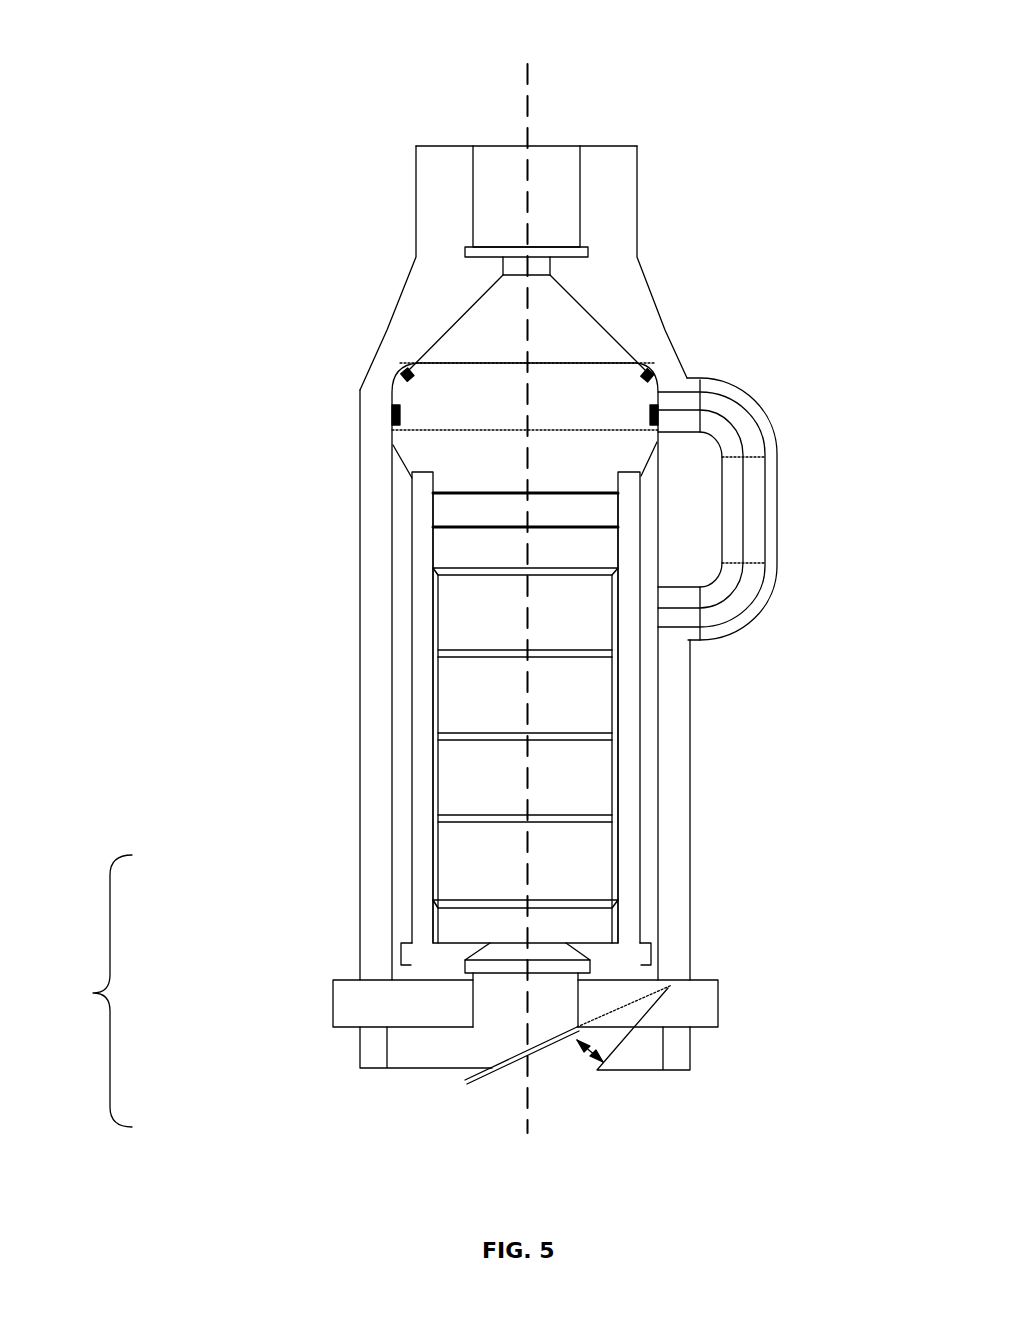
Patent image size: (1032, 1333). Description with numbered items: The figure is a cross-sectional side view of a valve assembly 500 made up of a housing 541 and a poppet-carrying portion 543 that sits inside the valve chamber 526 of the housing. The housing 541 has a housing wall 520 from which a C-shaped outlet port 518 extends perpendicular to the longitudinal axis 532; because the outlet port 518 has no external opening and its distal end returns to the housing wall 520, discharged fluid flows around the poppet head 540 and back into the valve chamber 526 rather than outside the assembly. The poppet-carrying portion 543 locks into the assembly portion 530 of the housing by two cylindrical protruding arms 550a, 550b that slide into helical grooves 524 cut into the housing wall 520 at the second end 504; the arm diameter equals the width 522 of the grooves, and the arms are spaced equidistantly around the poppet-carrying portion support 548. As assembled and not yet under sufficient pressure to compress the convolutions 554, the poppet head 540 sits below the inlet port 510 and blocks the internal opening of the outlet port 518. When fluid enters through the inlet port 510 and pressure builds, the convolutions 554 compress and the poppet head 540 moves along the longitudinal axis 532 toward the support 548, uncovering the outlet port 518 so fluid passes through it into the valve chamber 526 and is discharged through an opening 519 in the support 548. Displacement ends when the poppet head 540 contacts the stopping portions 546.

The valve assembly 500 is at (879, 25).
The second end 504 is at (801, 982).
The inlet port 510 is at (570, 199).
The outlet port 518 is at (780, 407).
The opening 519 is at (597, 981).
The housing wall 520 is at (351, 515).
The width 522 is at (583, 1040).
The helical grooves 524 is at (622, 1043).
The valve chamber 526 is at (674, 845).
The assembly portion 530 is at (89, 991).
The longitudinal axis 532 is at (528, 586).
The poppet head 540 is at (620, 373).
The housing 541 is at (352, 301).
The poppet-carrying portion 543 is at (462, 1127).
The stopping portions 546 is at (412, 700).
The poppet-carrying portion support 548 is at (422, 992).
The protruding arm 550a is at (319, 1003).
The protruding arm 550b is at (717, 1003).
The convolutions 554 is at (601, 690).